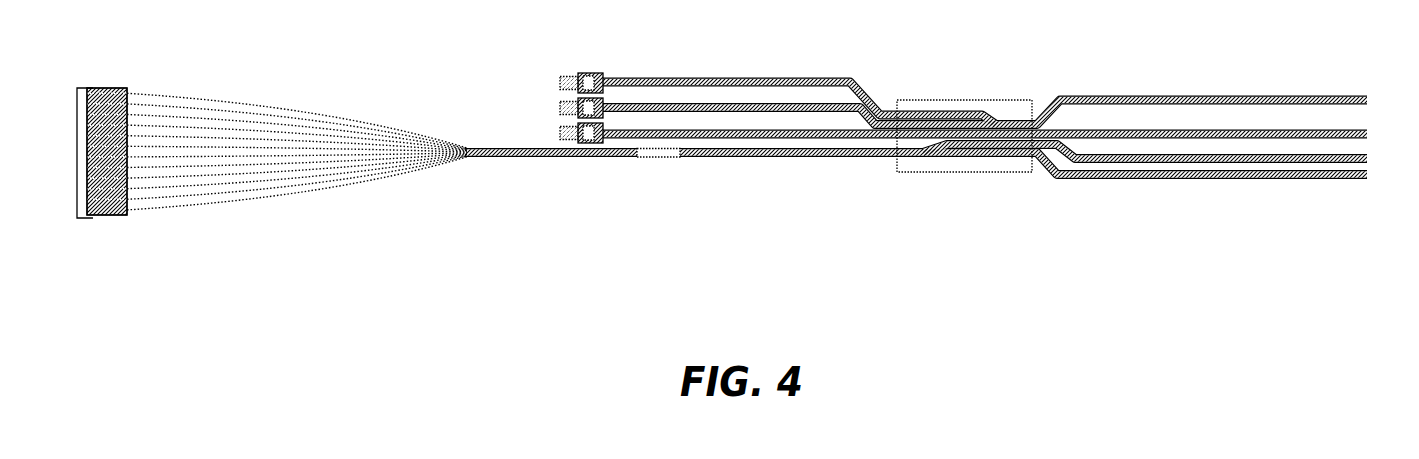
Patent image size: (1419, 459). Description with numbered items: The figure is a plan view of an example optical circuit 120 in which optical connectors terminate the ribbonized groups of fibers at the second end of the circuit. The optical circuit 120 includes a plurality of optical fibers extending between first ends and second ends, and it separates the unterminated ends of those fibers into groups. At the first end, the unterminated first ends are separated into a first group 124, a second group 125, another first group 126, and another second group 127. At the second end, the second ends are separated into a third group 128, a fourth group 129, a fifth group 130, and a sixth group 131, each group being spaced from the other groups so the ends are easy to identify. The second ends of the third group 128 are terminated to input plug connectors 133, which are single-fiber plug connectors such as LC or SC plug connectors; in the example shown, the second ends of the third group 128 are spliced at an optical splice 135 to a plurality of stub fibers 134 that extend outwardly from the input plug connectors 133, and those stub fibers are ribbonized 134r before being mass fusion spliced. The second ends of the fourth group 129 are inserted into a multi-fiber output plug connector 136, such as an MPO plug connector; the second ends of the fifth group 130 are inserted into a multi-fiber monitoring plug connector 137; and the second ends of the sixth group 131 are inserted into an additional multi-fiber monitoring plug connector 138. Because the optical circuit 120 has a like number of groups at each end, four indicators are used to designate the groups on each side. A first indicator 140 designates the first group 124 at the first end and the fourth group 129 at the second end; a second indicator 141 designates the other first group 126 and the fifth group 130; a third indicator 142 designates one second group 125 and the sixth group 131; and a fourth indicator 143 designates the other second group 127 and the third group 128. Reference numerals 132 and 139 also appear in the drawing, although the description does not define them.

The optical circuit 120 is at (968, 97).
The first group 124 is at (1370, 97).
The second group 125 is at (1385, 167).
The another first group 126 is at (1385, 123).
The another second group 127 is at (1370, 178).
The third group 128 is at (682, 153).
The fourth group 129 is at (607, 78).
The fifth group 130 is at (605, 106).
The sixth group 131 is at (605, 130).
The multi-fiber connector 132 is at (77, 155).
The input plug connector 133 is at (86, 185).
The stub fibers 134 is at (425, 168).
The ribbonized stub fibers 134r is at (609, 157).
The optical splice 135 is at (660, 157).
The output plug connector 136 is at (595, 71).
The monitoring plug connector 137 is at (560, 108).
The additional monitoring plug connector 138 is at (560, 135).
The bend 139 is at (1022, 110).
The first indicator 140 is at (758, 77).
The second indicator 141 is at (753, 105).
The third indicator 142 is at (762, 132).
The fourth indicator 143 is at (768, 150).